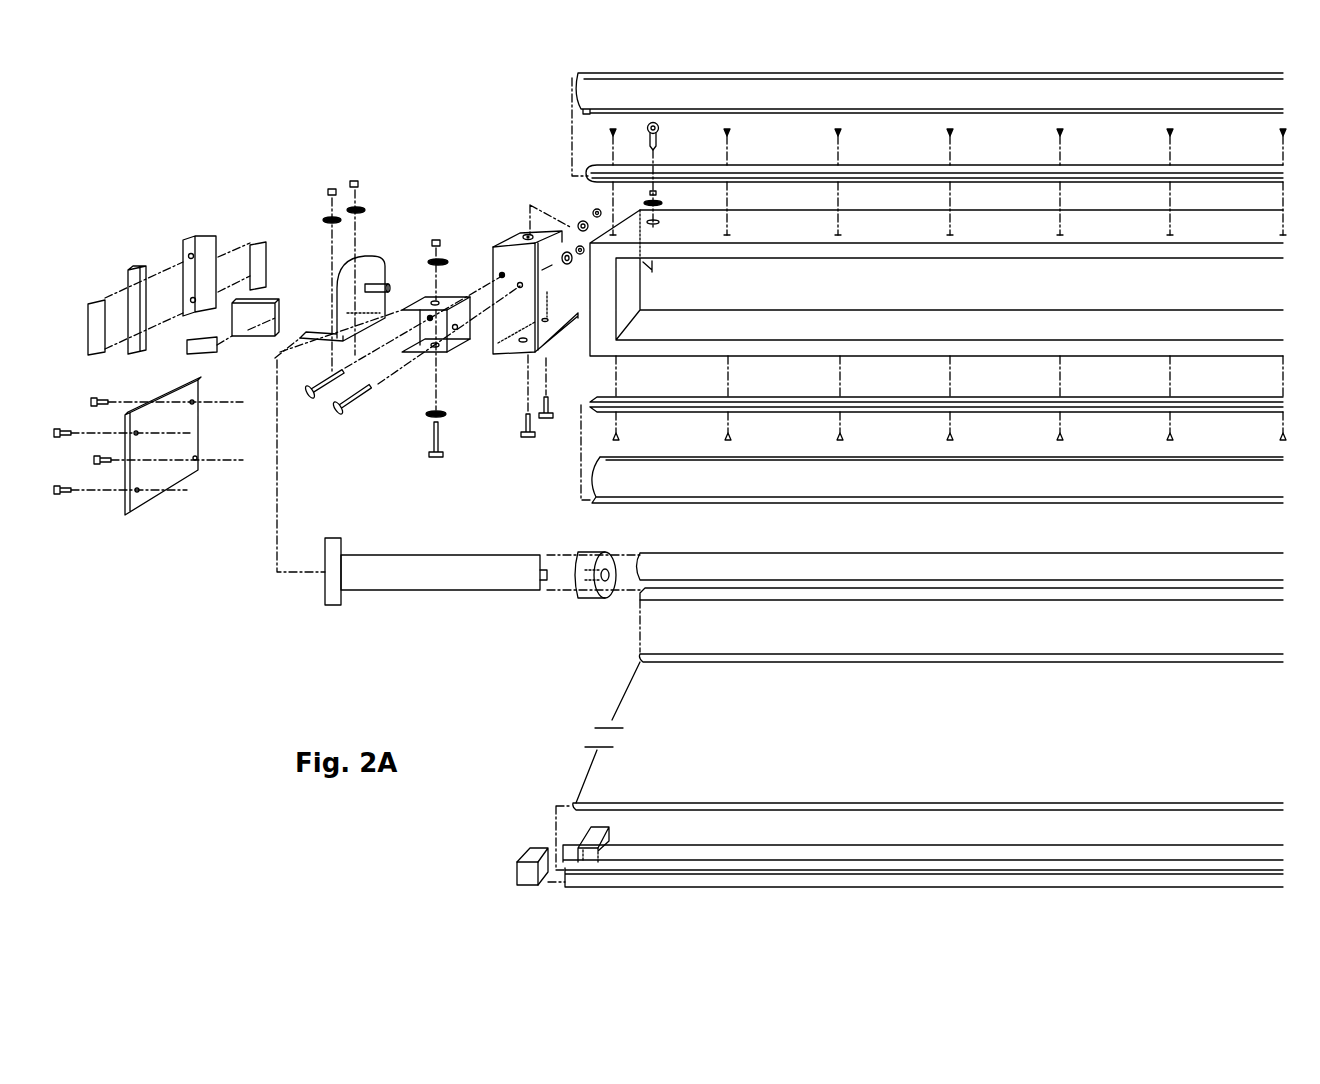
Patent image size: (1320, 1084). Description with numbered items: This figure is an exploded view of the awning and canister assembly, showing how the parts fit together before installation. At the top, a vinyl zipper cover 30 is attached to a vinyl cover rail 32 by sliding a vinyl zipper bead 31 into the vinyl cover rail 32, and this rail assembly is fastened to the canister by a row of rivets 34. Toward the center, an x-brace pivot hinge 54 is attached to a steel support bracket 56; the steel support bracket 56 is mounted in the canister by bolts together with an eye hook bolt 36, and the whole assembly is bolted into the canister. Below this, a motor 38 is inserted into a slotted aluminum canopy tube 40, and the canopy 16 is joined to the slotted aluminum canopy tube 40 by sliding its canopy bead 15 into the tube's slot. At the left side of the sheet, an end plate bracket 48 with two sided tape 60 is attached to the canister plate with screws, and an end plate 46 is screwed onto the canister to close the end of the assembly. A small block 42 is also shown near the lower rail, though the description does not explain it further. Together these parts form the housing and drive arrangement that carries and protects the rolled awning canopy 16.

The canopy bead 15 is at (693, 654).
The canopy 16 is at (612, 712).
The vinyl zipper cover 30 is at (597, 479).
The vinyl zipper bead 31 is at (577, 75).
The vinyl cover rail 32 is at (592, 168).
The rivets 34 is at (1057, 130).
The eye hook bolt 36 is at (661, 136).
The motor 38 is at (430, 591).
The slotted aluminum canopy tube 40 is at (928, 553).
The block 42 is at (514, 858).
The end plate 46 is at (186, 484).
The end plate bracket 48 is at (146, 266).
The x-brace pivot hinge 54 is at (452, 353).
The steel support bracket 56 is at (498, 238).
The two sided tape 60 is at (252, 243).